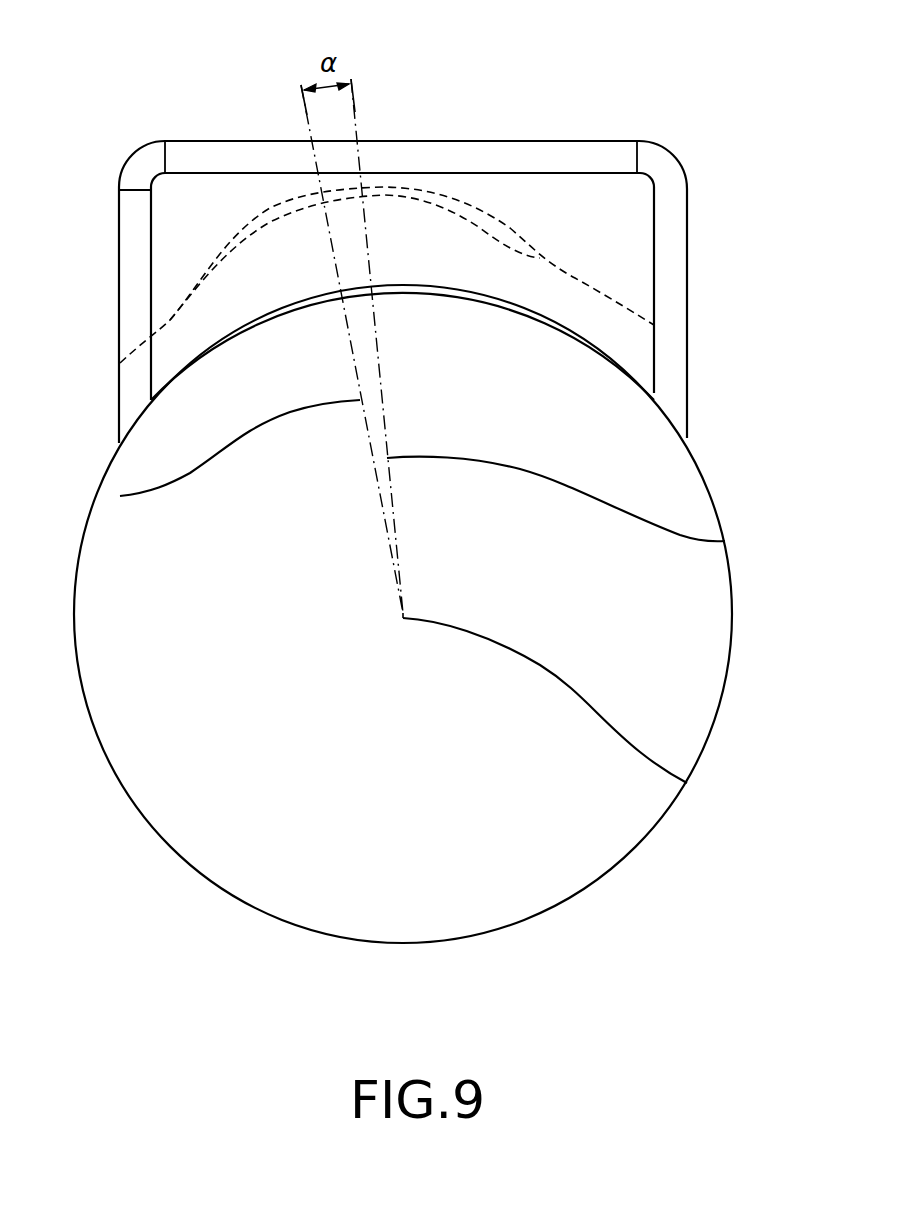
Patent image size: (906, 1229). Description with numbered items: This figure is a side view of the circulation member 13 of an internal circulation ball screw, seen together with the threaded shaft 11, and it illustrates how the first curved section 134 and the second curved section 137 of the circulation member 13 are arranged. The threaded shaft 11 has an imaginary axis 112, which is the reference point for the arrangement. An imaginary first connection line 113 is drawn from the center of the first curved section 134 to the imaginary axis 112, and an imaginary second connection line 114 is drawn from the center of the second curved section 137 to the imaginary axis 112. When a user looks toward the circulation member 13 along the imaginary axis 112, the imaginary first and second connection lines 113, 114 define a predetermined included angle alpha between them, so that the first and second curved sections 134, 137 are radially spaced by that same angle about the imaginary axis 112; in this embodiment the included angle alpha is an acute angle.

The threaded shaft 11 is at (710, 499).
The imaginary axis 112 is at (687, 783).
The imaginary first connection line 113 is at (120, 496).
The imaginary second connection line 114 is at (725, 541).
The circulation member 13 is at (655, 139).
The first curved section 134 is at (220, 250).
The second curved section 137 is at (252, 232).